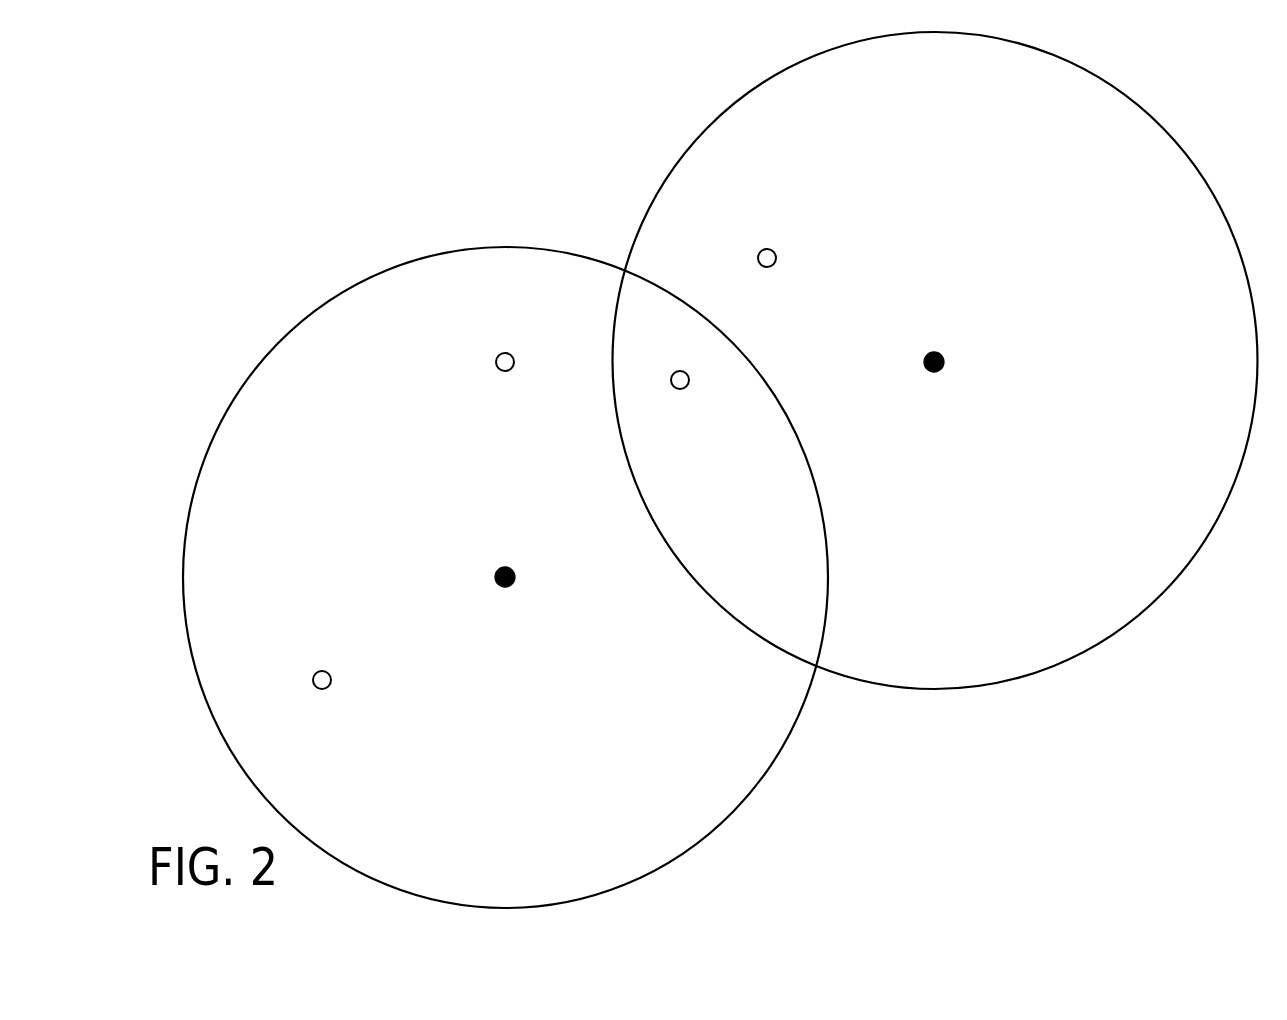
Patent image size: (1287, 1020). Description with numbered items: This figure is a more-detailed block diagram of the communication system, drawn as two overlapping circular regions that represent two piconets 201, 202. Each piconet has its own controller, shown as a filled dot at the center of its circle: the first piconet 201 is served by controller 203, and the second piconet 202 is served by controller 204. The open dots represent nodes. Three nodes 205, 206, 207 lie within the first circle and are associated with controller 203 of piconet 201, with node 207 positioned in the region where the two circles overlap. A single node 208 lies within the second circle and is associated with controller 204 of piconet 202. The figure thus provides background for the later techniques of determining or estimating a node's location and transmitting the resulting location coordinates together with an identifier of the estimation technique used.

The piconet 201 is at (712, 829).
The piconet 202 is at (1063, 667).
The controller 203 is at (514, 583).
The controller 204 is at (944, 367).
The node 205 is at (333, 688).
The node 206 is at (513, 372).
The node 207 is at (690, 383).
The node 208 is at (777, 255).